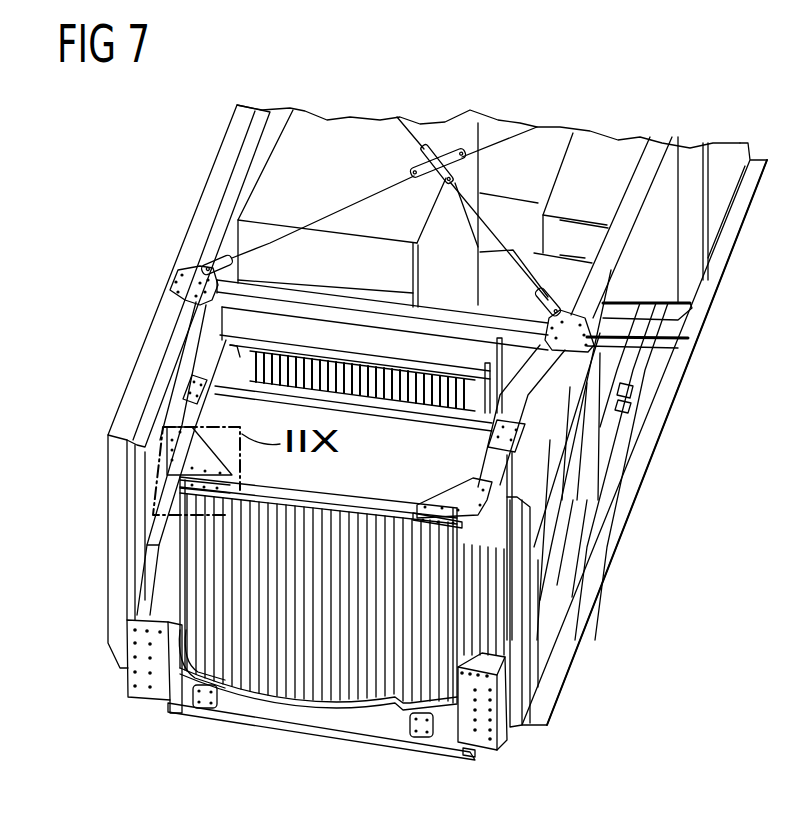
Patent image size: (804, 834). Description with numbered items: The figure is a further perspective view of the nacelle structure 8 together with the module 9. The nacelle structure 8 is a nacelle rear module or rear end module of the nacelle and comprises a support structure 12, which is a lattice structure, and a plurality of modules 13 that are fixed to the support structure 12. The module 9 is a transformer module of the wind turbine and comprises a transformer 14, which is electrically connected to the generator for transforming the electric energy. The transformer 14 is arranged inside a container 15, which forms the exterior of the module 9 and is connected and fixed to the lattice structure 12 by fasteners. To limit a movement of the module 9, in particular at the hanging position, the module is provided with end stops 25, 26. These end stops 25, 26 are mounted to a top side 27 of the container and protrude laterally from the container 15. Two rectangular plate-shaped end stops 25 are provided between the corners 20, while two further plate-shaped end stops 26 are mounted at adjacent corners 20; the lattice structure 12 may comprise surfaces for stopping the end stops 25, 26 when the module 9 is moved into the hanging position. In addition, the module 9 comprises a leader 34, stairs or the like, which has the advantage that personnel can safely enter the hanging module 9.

The nacelle structure 8 is at (456, 113).
The module 9 is at (152, 546).
The support structure 12 is at (228, 155).
The modules 13 is at (341, 148).
The transformer 14 is at (400, 472).
The container 15 is at (185, 703).
The corners 20 is at (198, 312).
The end stops 25 is at (190, 387).
The end stops 26 is at (167, 470).
The top side 27 is at (197, 408).
The leader 34 is at (492, 348).